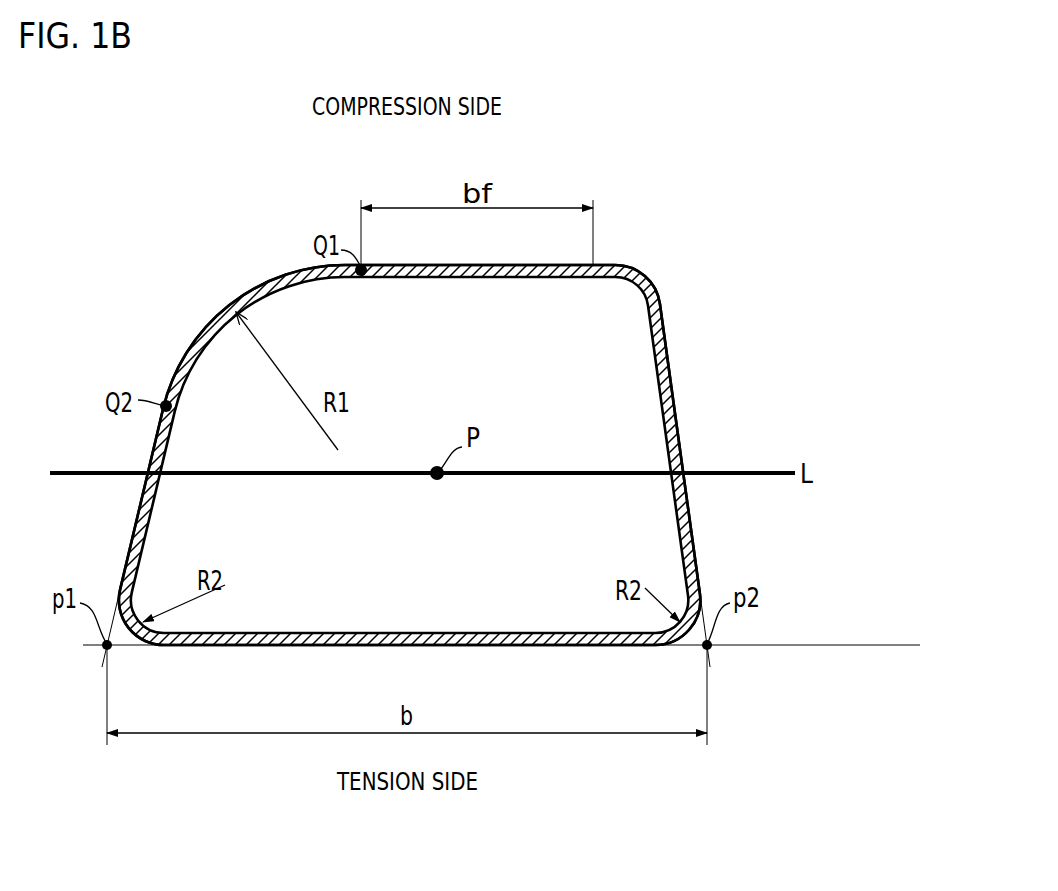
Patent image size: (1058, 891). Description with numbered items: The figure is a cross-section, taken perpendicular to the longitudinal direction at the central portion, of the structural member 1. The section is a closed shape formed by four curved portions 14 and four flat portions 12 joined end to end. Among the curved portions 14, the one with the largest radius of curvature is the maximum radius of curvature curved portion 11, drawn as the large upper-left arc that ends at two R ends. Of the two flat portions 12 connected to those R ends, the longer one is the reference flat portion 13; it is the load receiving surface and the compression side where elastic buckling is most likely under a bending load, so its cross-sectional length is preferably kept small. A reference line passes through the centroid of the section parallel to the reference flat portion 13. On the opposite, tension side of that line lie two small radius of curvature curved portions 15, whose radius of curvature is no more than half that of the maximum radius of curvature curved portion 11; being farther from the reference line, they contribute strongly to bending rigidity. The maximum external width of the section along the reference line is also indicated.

The structural member 1 is at (692, 313).
The maximum radius of curvature curved portion 11 is at (207, 339).
The flat portion 12 is at (679, 428).
The reference flat portion 13 is at (460, 265).
The curved portion 14 is at (632, 281).
The small radius of curvature curved portion 15 is at (137, 634).